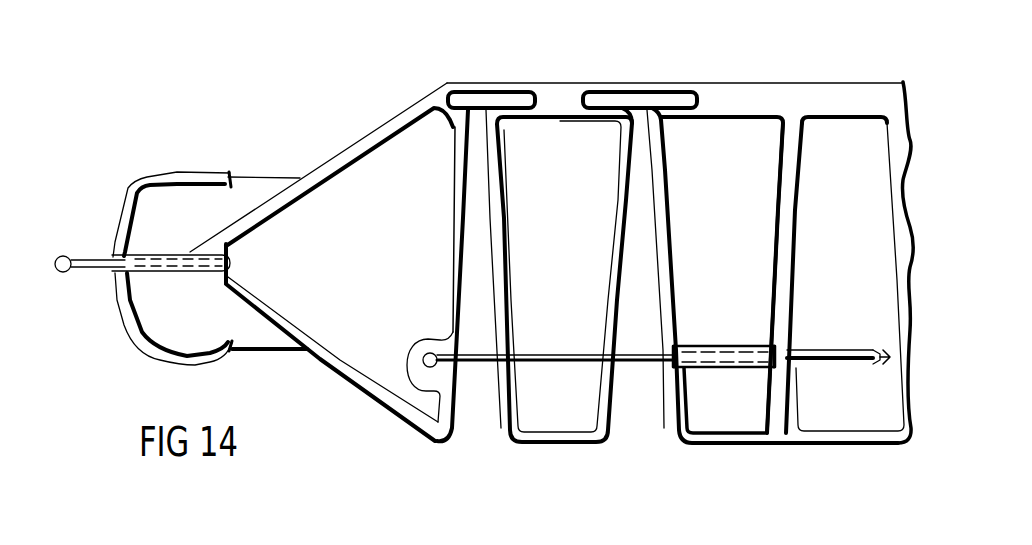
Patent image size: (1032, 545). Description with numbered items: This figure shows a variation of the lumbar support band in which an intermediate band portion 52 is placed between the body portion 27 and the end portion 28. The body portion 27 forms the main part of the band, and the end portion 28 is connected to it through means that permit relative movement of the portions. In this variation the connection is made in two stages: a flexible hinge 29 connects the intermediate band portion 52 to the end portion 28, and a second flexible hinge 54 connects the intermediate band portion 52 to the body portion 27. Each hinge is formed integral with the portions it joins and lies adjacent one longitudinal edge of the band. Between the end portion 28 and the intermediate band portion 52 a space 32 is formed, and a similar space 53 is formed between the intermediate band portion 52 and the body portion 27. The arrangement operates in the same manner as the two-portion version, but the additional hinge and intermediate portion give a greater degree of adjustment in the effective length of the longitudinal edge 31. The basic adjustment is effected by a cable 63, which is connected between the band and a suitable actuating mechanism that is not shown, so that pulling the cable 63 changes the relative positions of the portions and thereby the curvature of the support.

The body portion 27 is at (838, 392).
The end portion 28 is at (365, 300).
The flexible hinge 29 is at (488, 83).
The longitudinal edge 31 is at (760, 441).
The space 32 is at (473, 418).
The intermediate band portion 52 is at (548, 417).
The space 53 is at (634, 418).
The flexible hinge 54 is at (640, 83).
The cable 63 is at (90, 259).